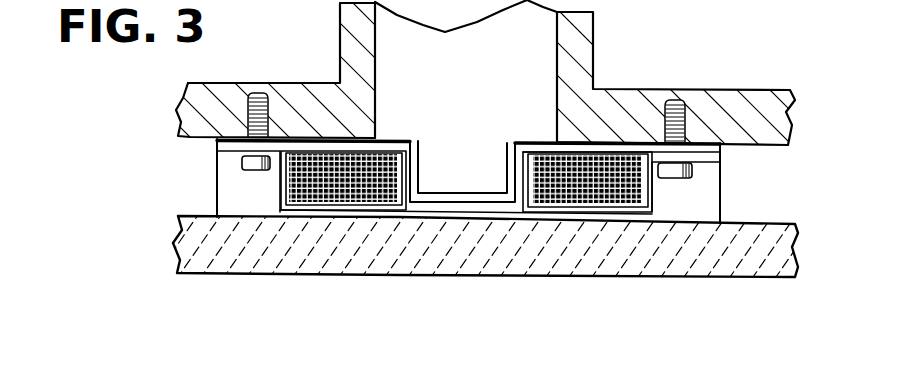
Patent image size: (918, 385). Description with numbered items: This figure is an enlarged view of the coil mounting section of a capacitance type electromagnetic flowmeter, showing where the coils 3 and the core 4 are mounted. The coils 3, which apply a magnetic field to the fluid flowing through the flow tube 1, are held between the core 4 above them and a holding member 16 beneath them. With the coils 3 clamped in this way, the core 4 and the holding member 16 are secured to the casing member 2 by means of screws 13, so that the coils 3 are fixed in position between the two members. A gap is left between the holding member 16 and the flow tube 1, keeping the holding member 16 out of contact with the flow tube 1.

The flow tube 1 is at (658, 278).
The casing member 2 is at (727, 100).
The coils 3 is at (357, 198).
The core 4 is at (407, 138).
The screws 13 is at (683, 178).
The holding member 16 is at (505, 214).